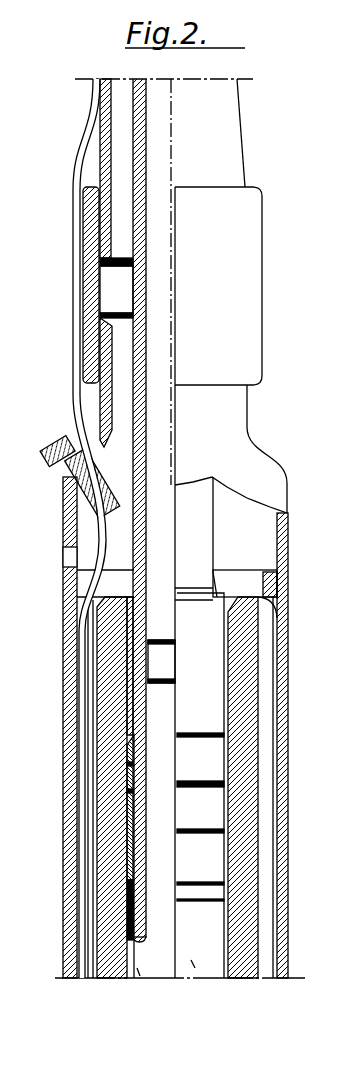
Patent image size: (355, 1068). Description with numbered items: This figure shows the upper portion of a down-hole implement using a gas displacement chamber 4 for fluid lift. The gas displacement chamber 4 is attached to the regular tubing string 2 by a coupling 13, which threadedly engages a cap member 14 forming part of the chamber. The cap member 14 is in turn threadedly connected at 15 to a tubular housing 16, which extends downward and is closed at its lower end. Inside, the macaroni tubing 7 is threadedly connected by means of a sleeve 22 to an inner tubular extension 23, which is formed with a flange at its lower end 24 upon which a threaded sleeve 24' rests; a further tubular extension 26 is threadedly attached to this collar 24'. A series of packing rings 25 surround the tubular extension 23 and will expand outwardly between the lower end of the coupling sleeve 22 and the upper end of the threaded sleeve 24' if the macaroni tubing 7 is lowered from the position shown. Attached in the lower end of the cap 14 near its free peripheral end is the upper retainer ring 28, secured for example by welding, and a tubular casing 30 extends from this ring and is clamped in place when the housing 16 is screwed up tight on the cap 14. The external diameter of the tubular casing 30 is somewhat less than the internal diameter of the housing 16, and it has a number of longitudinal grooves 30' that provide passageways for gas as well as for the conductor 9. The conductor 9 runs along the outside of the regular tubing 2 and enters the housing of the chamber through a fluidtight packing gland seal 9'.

The regular tubing string 2 is at (225, 102).
The gas displacement chamber 4 is at (327, 808).
The macaroni tubing 7 is at (146, 242).
The conductor 9 is at (65, 528).
The fluidtight packing gland seal 9' is at (68, 479).
The coupling 13 is at (96, 305).
The cap member 14 is at (238, 427).
The threaded connection 15 is at (289, 572).
The tubular housing 16 is at (285, 755).
The sleeve 22 is at (135, 660).
The inner tubular extension 23 is at (127, 853).
The flange 24 is at (171, 955).
The threaded sleeve 24' is at (72, 914).
The packing rings 25 is at (127, 792).
The further tubular extension 26 is at (193, 963).
The upper retainer ring 28 is at (272, 618).
The tubular casing 30 is at (288, 698).
The longitudinal grooves 30' is at (301, 889).